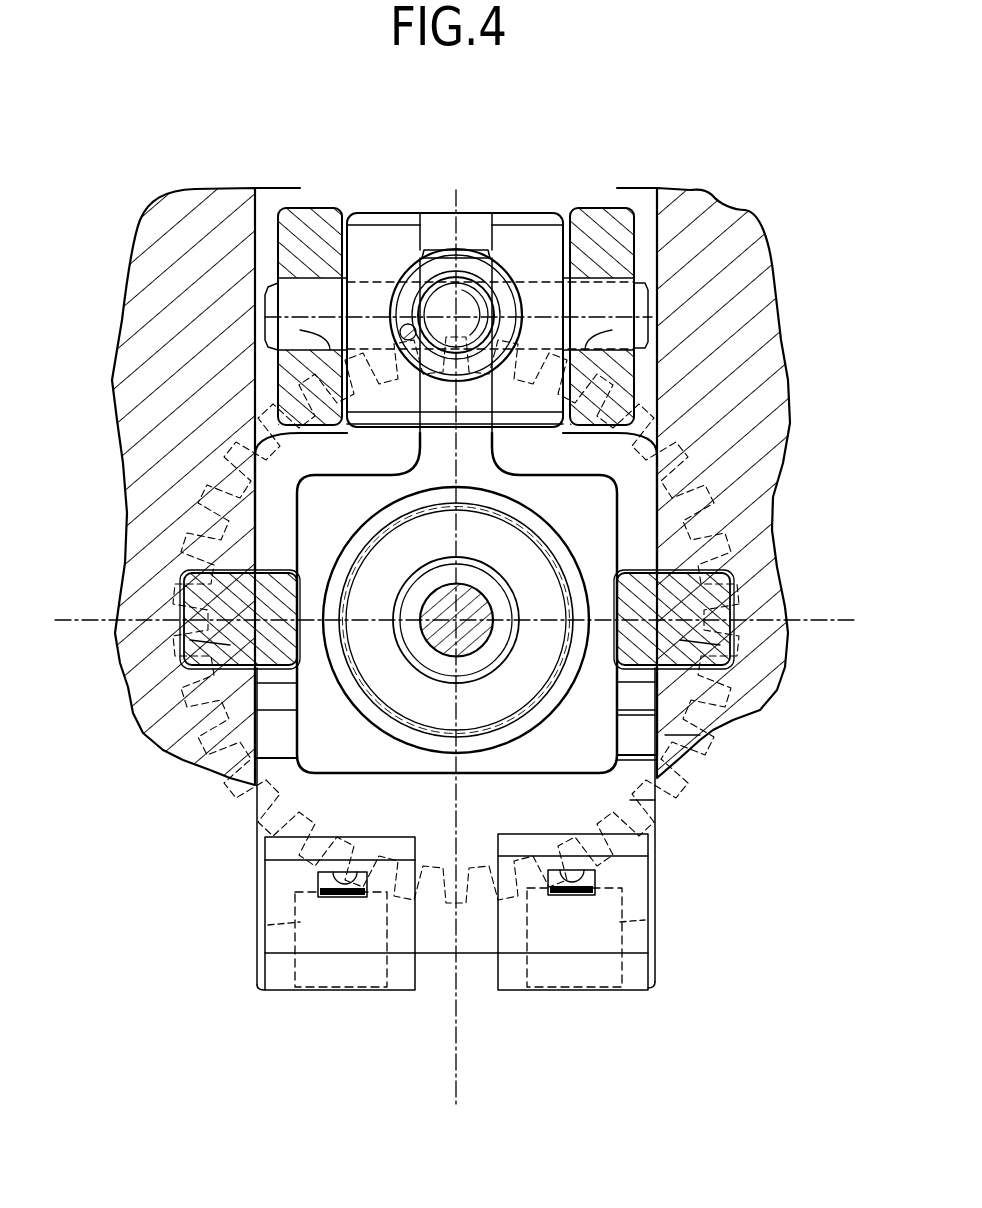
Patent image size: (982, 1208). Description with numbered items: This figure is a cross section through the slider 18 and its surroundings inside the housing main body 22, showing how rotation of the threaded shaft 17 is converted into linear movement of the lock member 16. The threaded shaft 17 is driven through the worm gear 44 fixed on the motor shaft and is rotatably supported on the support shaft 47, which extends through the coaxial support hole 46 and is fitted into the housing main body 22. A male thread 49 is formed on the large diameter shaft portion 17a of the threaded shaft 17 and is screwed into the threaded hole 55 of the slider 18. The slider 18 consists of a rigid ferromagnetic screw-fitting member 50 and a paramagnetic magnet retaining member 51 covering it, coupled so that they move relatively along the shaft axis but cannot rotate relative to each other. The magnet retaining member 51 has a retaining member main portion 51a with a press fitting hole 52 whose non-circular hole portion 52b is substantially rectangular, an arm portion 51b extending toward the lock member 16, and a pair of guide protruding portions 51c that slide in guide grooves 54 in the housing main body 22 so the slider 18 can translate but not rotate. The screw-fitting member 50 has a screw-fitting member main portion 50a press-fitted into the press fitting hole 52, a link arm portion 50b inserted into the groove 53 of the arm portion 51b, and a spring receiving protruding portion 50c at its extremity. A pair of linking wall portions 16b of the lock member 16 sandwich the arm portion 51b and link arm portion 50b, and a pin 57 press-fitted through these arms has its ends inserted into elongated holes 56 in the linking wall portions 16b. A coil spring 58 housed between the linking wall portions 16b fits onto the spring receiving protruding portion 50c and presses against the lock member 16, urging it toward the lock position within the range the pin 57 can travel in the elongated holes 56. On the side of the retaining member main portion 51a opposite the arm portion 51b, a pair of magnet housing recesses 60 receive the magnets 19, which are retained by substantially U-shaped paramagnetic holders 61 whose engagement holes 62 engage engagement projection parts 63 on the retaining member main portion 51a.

The lock member 16 is at (268, 240).
The linking wall portions 16b is at (325, 225).
The threaded shaft 17 is at (471, 752).
The large diameter shaft portion 17a is at (405, 690).
The slider 18 is at (110, 765).
The magnets 19 is at (300, 925).
The housing main body 22 is at (735, 370).
The worm gear 44 is at (745, 480).
The support hole 46 is at (452, 598).
The support shaft 47 is at (478, 641).
The male thread 49 is at (380, 530).
The screw-fitting member 50 is at (278, 722).
The screw-fitting member main portion 50a is at (317, 522).
The link arm portion 50b is at (448, 245).
The spring receiving protruding portion 50c is at (438, 302).
The magnet retaining member 51 is at (245, 840).
The retaining member main portion 51a is at (630, 803).
The arm portion 51b is at (527, 236).
The guide protruding portions 51c is at (227, 643).
The press fitting hole 52 is at (561, 770).
The non-circular hole portion 52b is at (622, 686).
The groove 53 is at (495, 228).
The guide grooves 54 is at (200, 593).
The threaded hole 55 is at (532, 563).
The elongated holes 56 is at (318, 347).
The pin 57 is at (305, 300).
The coil spring 58 is at (505, 326).
The magnet housing recesses 60 is at (310, 975).
The holders 61 is at (350, 992).
The engagement holes 62 is at (350, 878).
The engagement projection parts 63 is at (335, 878).